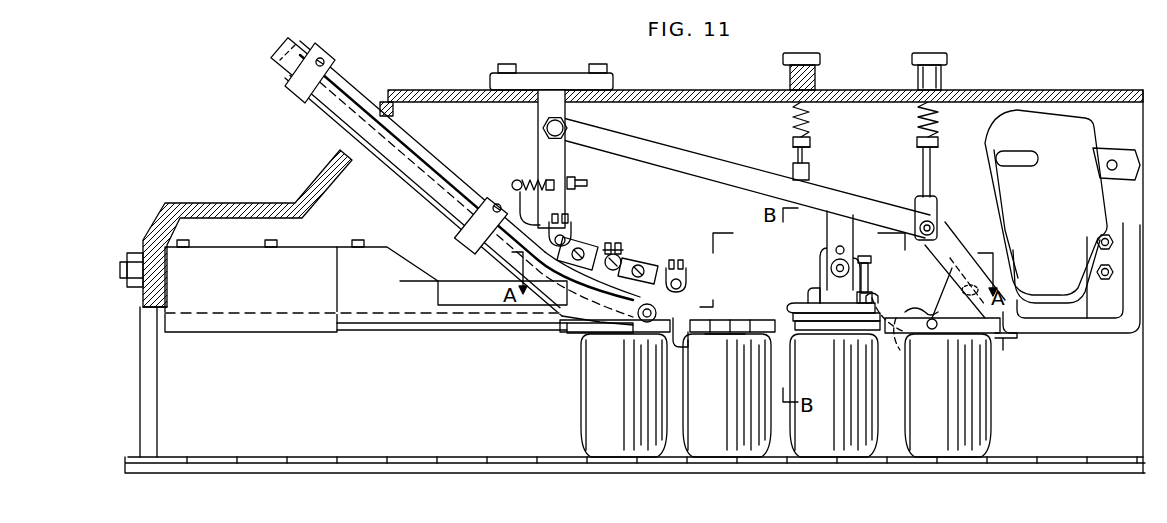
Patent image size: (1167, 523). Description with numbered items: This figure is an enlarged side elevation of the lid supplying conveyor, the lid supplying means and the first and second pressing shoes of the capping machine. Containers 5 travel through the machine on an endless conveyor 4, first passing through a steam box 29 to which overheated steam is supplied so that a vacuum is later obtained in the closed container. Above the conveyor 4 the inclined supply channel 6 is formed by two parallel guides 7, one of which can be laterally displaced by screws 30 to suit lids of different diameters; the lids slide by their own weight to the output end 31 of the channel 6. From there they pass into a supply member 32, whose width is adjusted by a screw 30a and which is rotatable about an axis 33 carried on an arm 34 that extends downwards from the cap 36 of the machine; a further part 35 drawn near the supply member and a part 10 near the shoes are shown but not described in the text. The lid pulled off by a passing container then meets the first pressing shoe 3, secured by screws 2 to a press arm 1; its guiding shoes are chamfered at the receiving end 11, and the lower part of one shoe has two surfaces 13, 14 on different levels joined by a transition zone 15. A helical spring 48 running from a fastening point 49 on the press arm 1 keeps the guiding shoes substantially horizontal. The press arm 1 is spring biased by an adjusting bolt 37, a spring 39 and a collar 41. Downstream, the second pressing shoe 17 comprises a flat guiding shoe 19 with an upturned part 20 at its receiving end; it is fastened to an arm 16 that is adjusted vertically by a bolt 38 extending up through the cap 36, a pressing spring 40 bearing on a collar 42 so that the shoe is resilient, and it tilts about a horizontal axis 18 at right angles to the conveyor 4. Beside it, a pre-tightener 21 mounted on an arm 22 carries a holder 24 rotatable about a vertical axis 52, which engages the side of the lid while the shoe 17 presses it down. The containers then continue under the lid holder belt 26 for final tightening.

The press arm 1 is at (828, 232).
The screws 2 is at (829, 263).
The first pressing shoe 3 is at (812, 288).
The endless conveyor 4 is at (268, 456).
The containers 5 is at (595, 397).
The supply channel 6 is at (362, 100).
The guides 7 is at (678, 333).
The rail 10 is at (727, 334).
The receiving end 11 is at (788, 310).
The surface 13 is at (793, 327).
The surface 14 is at (857, 318).
The transition zone 15 is at (830, 318).
The arm 16 is at (947, 213).
The second pressing shoe 17 is at (950, 285).
The horizontal axis 18 is at (963, 272).
The guiding shoe 19 is at (977, 331).
The upturned part 20 is at (886, 312).
The pre-tightener 21 is at (922, 324).
The arm 22 is at (1085, 334).
The holder 24 is at (1005, 340).
The lid holder belt 26 is at (968, 238).
The steam box 29 is at (246, 307).
The screws 30 is at (325, 60).
The screw 30a is at (634, 260).
The output end 31 is at (520, 266).
The supply member 32 is at (586, 238).
The axis 33 is at (566, 233).
The arm 34 is at (534, 155).
The clamp 35 is at (618, 246).
The cap 36 is at (696, 89).
The adjusting bolt 37 is at (795, 162).
The bolt 38 is at (922, 173).
The spring 39 is at (790, 122).
The pressing spring 40 is at (918, 122).
The collar 41 is at (806, 150).
The collar 42 is at (939, 148).
The helical spring 48 is at (869, 276).
The fastening point 49 is at (868, 248).
The vertical axis 52 is at (898, 322).